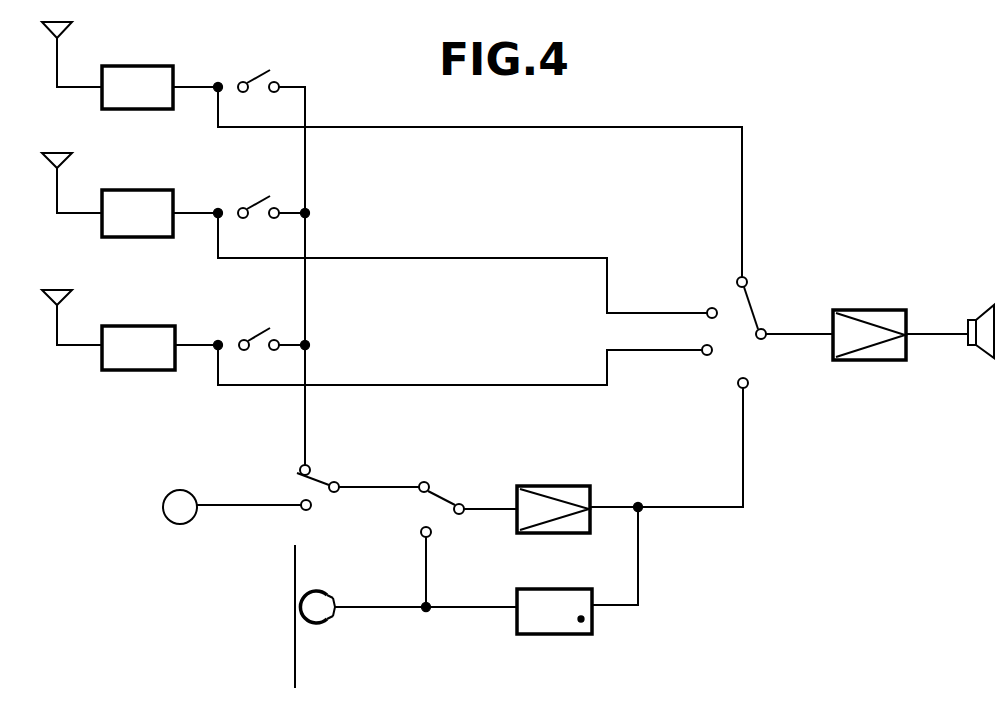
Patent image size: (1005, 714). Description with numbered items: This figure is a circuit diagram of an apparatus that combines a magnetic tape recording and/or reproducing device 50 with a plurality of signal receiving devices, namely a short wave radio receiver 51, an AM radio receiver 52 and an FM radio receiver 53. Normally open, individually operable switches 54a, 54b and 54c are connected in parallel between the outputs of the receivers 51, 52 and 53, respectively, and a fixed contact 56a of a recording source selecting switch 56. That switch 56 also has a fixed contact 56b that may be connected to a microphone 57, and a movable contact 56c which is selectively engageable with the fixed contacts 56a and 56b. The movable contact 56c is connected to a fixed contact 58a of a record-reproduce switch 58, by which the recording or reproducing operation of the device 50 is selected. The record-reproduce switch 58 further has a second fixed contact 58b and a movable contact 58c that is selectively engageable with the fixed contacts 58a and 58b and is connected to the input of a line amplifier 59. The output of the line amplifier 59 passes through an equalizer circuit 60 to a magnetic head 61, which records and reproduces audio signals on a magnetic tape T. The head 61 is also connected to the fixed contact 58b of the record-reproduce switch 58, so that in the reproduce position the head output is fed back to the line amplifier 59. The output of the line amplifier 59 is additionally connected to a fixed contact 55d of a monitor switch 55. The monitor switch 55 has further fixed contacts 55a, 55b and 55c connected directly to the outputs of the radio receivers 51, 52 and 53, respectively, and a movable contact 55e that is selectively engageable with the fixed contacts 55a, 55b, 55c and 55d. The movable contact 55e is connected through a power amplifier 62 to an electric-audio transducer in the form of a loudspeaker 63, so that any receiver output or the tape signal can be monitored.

The magnetic tape recording and/or reproducing device 50 is at (661, 608).
The short wave radio receiver 51 is at (132, 66).
The AM radio receiver 52 is at (132, 190).
The FM radio receiver 53 is at (132, 326).
The normally open switch 54a is at (261, 73).
The normally open switch 54b is at (261, 200).
The normally open switch 54c is at (261, 332).
The monitor switch 55 is at (740, 320).
The fixed contact 55a is at (739, 279).
The fixed contact 55b is at (714, 308).
The fixed contact 55c is at (706, 345).
The fixed contact 55d is at (738, 382).
The movable contact 55e is at (764, 330).
The recording source selecting switch 56 is at (324, 484).
The fixed contact 56a is at (311, 469).
The fixed contact 56b is at (312, 506).
The movable contact 56c is at (340, 484).
The microphone 57 is at (180, 491).
The record-reproduce switch 58 is at (426, 494).
The fixed contact 58a is at (424, 481).
The fixed contact 58b is at (419, 532).
The movable contact 58c is at (452, 502).
The line amplifier 59 is at (556, 486).
The equalizer circuit 60 is at (561, 634).
The magnetic head 61 is at (322, 624).
The power amplifier 62 is at (878, 360).
The loudspeaker 63 is at (986, 352).
The magnetic tape T is at (293, 638).